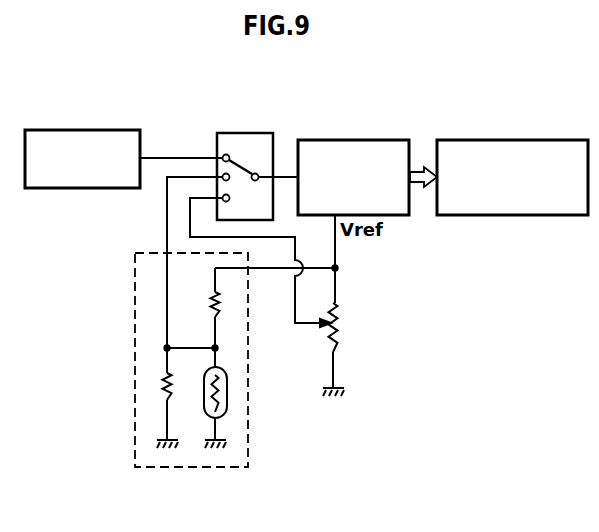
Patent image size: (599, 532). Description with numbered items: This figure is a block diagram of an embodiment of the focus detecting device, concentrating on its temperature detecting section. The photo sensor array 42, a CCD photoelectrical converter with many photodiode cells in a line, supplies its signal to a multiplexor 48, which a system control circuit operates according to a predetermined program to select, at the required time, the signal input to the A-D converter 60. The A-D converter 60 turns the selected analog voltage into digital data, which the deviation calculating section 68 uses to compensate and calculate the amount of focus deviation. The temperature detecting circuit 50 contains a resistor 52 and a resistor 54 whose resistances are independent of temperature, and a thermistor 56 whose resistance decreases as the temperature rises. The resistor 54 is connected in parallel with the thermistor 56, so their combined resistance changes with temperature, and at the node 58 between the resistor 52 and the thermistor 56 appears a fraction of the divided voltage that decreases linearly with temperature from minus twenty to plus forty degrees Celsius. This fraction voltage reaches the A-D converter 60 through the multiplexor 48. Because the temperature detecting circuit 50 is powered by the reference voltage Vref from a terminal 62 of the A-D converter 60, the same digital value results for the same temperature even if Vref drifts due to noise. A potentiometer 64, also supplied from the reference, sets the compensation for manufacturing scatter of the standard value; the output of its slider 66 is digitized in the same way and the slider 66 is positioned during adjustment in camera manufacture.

The photo sensor array 42 is at (98, 130).
The multiplexor 48 is at (272, 133).
The temperature detecting circuit 50 is at (193, 468).
The resistor 52 is at (218, 295).
The resistor 54 is at (167, 400).
The thermistor 56 is at (225, 408).
The node 58 is at (218, 349).
The A-D converter 60 is at (368, 140).
The terminal 62 is at (337, 252).
The potentiometer 64 is at (338, 310).
The slider 66 is at (303, 326).
The deviation calculating section 68 is at (490, 140).